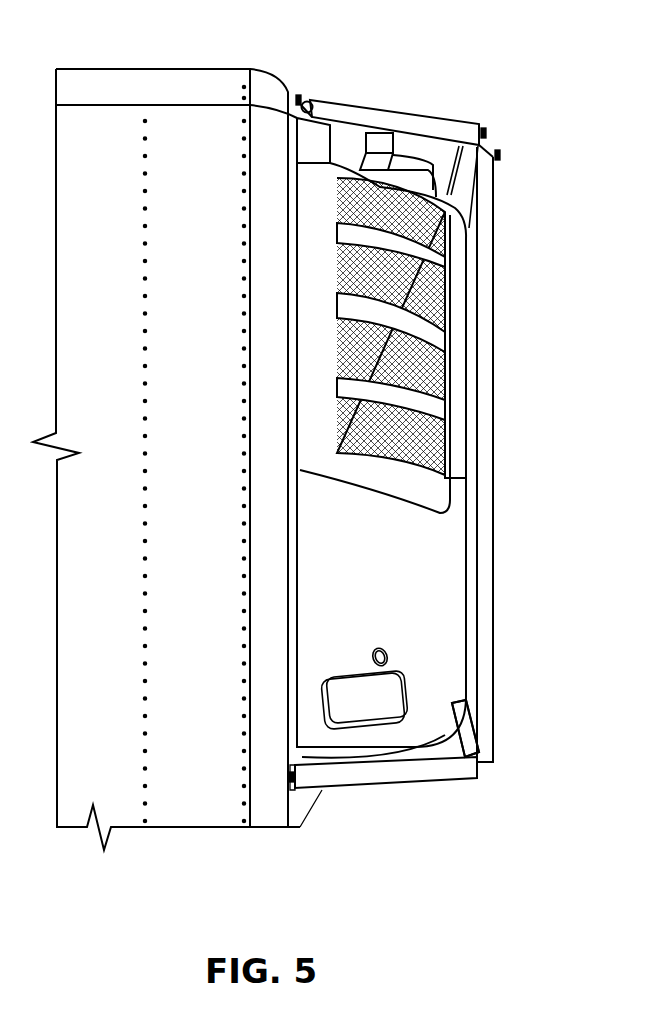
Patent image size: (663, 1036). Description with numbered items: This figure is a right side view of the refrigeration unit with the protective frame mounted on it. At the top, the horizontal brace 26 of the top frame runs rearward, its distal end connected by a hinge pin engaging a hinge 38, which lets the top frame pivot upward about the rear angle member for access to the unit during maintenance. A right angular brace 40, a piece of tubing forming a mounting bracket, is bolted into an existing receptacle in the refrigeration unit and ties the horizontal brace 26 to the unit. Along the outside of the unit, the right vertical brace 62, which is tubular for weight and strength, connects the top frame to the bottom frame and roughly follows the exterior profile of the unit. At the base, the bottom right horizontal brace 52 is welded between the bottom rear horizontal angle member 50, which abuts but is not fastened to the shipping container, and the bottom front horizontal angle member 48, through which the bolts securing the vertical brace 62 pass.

The left horizontal brace 26 is at (433, 122).
The hinge 38 is at (308, 102).
The right angular brace 40 is at (378, 143).
The bottom front horizontal angle member 48 is at (457, 747).
The bottom rear horizontal angle member 50 is at (473, 773).
The bottom right horizontal brace 52 is at (423, 780).
The right vertical brace 62 is at (482, 447).